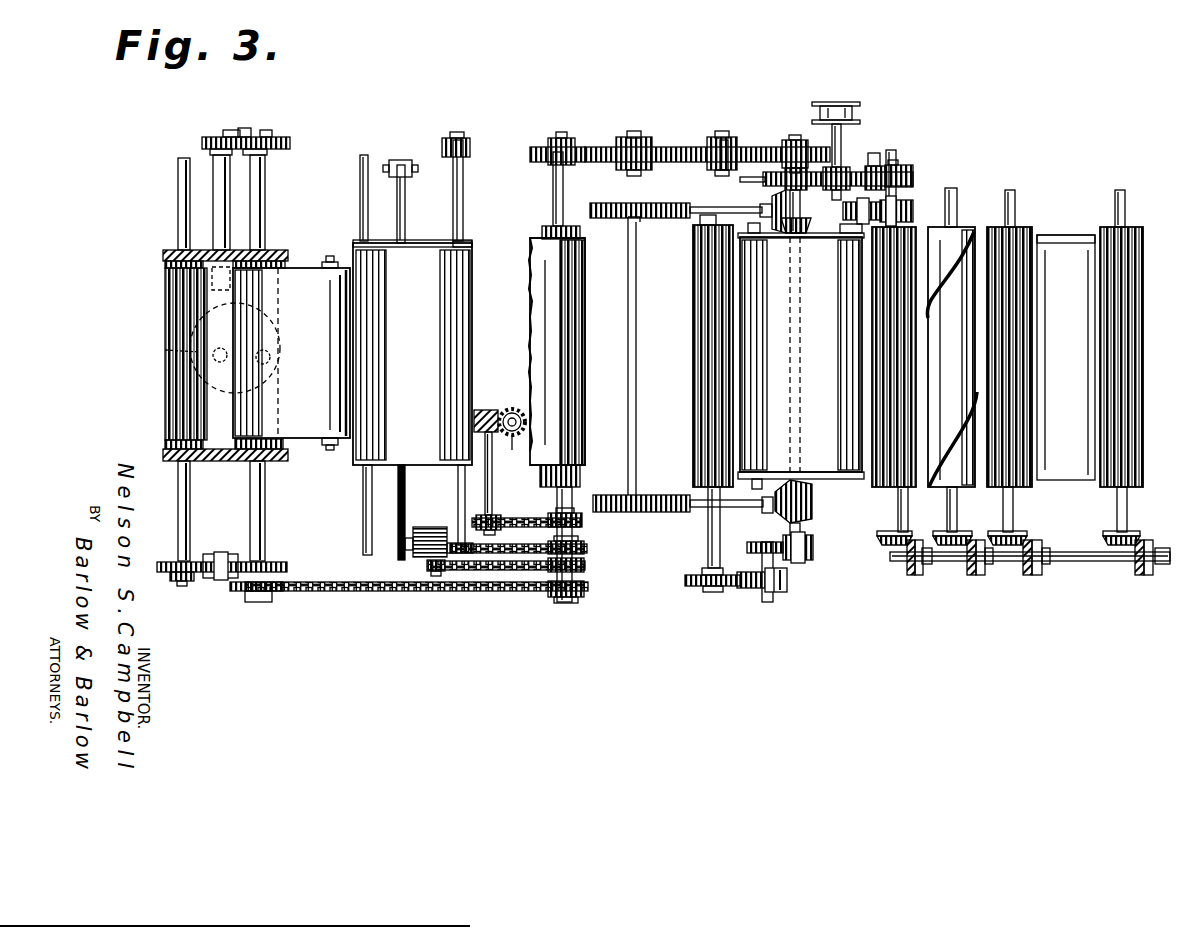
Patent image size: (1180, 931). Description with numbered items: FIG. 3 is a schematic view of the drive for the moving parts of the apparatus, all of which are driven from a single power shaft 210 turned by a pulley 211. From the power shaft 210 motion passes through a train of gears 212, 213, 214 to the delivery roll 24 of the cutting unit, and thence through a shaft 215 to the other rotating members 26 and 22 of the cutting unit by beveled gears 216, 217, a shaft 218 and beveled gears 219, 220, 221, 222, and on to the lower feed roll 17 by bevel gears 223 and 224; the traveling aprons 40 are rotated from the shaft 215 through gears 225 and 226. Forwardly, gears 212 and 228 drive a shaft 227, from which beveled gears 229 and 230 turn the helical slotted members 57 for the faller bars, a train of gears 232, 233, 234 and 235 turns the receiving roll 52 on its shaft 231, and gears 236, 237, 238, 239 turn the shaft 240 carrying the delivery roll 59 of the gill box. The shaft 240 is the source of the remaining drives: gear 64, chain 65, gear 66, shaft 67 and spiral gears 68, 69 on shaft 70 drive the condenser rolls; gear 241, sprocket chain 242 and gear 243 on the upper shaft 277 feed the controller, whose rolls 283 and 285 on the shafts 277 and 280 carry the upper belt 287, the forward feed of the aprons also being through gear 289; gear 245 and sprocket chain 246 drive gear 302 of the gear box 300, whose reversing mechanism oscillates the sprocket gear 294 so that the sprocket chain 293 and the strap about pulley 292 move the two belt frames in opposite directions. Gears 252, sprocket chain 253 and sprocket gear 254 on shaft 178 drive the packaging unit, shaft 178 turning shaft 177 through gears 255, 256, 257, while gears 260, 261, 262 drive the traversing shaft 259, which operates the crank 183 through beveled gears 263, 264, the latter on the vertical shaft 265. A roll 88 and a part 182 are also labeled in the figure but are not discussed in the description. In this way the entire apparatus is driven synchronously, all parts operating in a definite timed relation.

The lower feed roll 17 is at (1141, 482).
The rotating member of the cutting unit 22 is at (1015, 234).
The delivery roll of the cutting unit 24 is at (893, 490).
The rotating member of the cutting unit 26 is at (952, 234).
The traveling aprons 40 is at (840, 470).
The receiving roll 52 is at (695, 270).
The helical slotted members 57 is at (648, 203).
The delivery roll of the gill box 59 is at (545, 232).
The sprocket gear 64 is at (583, 521).
The sprocket chain 65 is at (508, 520).
The sprocket gear 66 is at (490, 514).
The shaft 67 is at (493, 480).
The spiral gear 68 is at (481, 408).
The spiral gear 69 is at (511, 409).
The shaft 70 is at (517, 452).
The roller 88 is at (583, 278).
The shaft 177 is at (190, 500).
The shaft 178 is at (265, 522).
The roller 182 is at (190, 385).
The crank 183 is at (265, 357).
The power shaft 210 is at (843, 145).
The pulley 211 is at (858, 116).
The gear 212 is at (840, 180).
The gear 213 is at (887, 170).
The gear 214 is at (903, 178).
The shaft 215 is at (900, 205).
The beveled gear 216 is at (878, 538).
The beveled gear 217 is at (913, 575).
The shaft 218 is at (950, 562).
The beveled gear 219 is at (978, 575).
The beveled gear 220 is at (962, 534).
The beveled gear 221 is at (1030, 575).
The beveled gear 222 is at (1022, 534).
The bevel gear 223 is at (1143, 575).
The bevel gear 224 is at (1106, 538).
The gear 225 is at (915, 205).
The gear 226 is at (844, 211).
The shaft 227 is at (812, 200).
The gear 228 is at (823, 179).
The beveled gear 229 is at (800, 233).
The beveled gear 230 is at (772, 212).
The shaft 231 is at (710, 532).
The gear 232 is at (813, 553).
The gear 233 is at (767, 540).
The gear 234 is at (786, 591).
The gear 235 is at (702, 587).
The gear 236 is at (795, 140).
The gear 237 is at (734, 147).
The gear 238 is at (670, 148).
The gear 239 is at (590, 163).
The shaft 240 is at (555, 185).
The gear 241 is at (585, 548).
The sprocket chain 242 is at (518, 538).
The gear 243 is at (455, 543).
The gear 245 is at (585, 565).
The sprocket chain 246 is at (515, 571).
The gear 252 is at (567, 603).
The sprocket chain 253 is at (435, 594).
The sprocket gear 254 is at (266, 596).
The gear 255 is at (283, 565).
The gear 256 is at (226, 556).
The gear 257 is at (185, 583).
The shaft 259 is at (224, 207).
The gear 260 is at (280, 140).
The gear 261 is at (245, 130).
The gear 262 is at (216, 140).
The beveled gear 263 is at (183, 293).
The beveled gear 264 is at (177, 325).
The vertical shaft 265 is at (177, 350).
The upper shaft 277 is at (460, 490).
The shaft 280 is at (368, 500).
The roll 283 is at (463, 242).
The roll 285 is at (362, 244).
The upper belt 287 is at (412, 352).
The gear 289 is at (467, 146).
The pulley 292 is at (402, 163).
The sprocket chain 293 is at (405, 505).
The sprocket gear 294 is at (413, 548).
The gear box 300 is at (405, 545).
The gear 302 is at (430, 572).